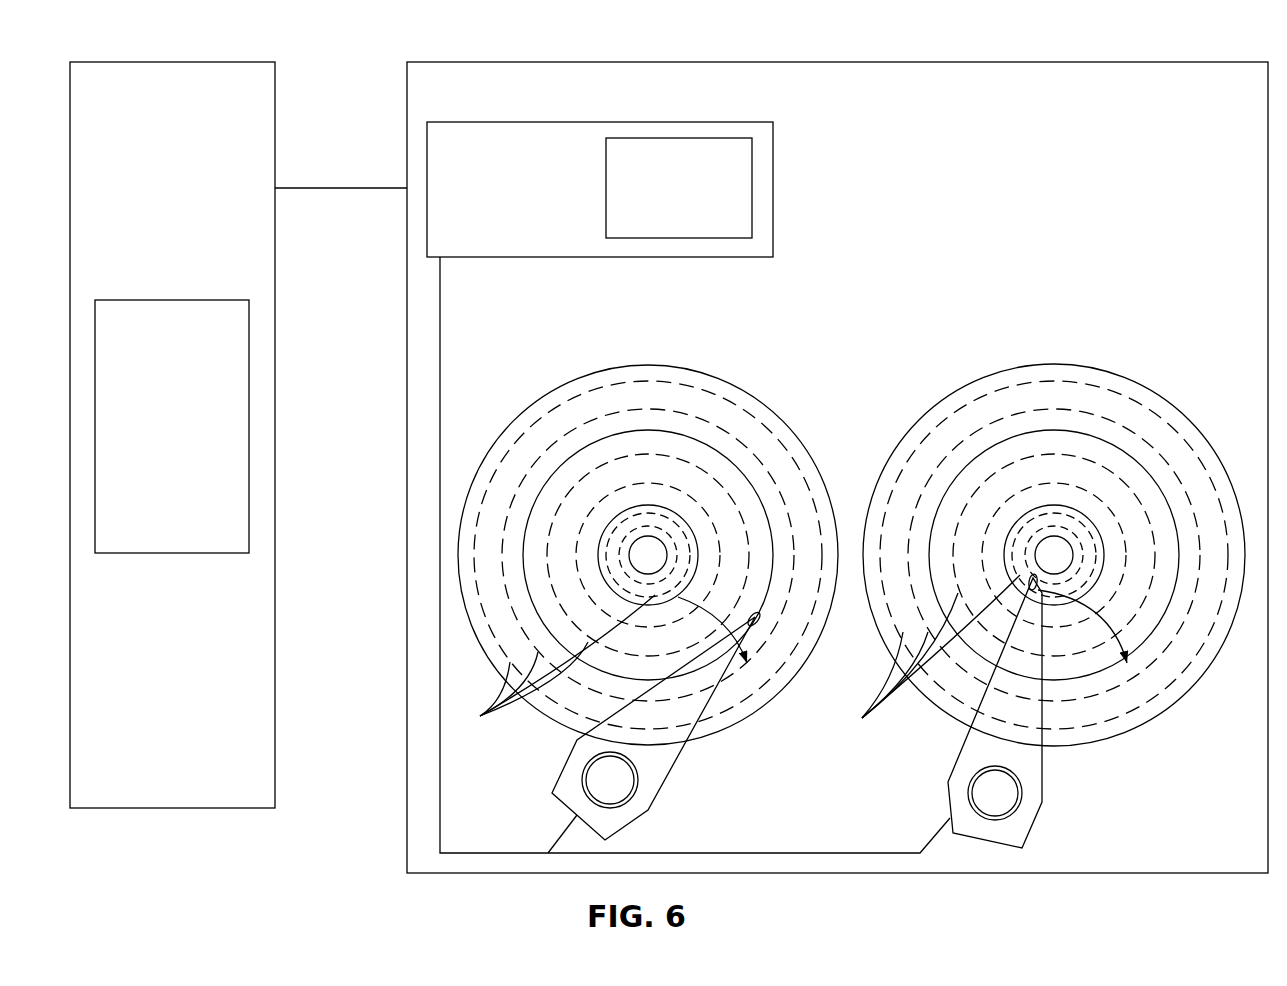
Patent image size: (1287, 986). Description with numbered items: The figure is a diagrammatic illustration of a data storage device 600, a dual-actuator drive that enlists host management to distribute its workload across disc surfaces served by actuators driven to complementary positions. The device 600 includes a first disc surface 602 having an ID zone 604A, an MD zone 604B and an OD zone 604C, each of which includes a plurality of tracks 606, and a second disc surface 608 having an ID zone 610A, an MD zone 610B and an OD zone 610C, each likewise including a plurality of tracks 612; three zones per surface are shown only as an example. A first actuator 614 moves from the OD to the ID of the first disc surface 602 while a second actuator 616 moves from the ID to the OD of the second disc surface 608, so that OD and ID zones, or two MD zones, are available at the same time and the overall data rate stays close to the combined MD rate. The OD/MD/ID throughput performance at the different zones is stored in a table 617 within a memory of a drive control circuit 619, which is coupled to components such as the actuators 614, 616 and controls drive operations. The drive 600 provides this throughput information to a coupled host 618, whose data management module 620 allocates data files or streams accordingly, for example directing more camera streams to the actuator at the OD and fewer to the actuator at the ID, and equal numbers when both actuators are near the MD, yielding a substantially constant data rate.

The data storage device 600 is at (460, 62).
The host 618 is at (156, 147).
The data management module 620 is at (156, 478).
The drive control circuit 619 is at (727, 122).
The table 617 is at (663, 214).
The first disc surface 602 is at (678, 355).
The ID zone 604A is at (613, 535).
The MD zone 604B is at (683, 482).
The OD zone 604C is at (707, 402).
The tracks 606 is at (549, 658).
The second disc surface 608 is at (1105, 357).
The ID zone 610A is at (1035, 533).
The MD zone 610B is at (1025, 467).
The OD zone 610C is at (1110, 398).
The tracks 612 is at (923, 654).
The first actuator 614 is at (683, 782).
The second actuator 616 is at (1050, 803).